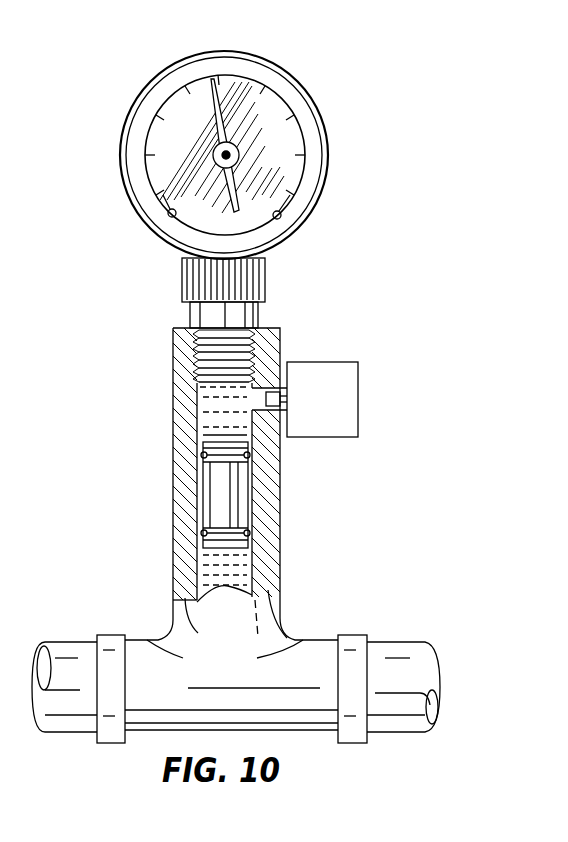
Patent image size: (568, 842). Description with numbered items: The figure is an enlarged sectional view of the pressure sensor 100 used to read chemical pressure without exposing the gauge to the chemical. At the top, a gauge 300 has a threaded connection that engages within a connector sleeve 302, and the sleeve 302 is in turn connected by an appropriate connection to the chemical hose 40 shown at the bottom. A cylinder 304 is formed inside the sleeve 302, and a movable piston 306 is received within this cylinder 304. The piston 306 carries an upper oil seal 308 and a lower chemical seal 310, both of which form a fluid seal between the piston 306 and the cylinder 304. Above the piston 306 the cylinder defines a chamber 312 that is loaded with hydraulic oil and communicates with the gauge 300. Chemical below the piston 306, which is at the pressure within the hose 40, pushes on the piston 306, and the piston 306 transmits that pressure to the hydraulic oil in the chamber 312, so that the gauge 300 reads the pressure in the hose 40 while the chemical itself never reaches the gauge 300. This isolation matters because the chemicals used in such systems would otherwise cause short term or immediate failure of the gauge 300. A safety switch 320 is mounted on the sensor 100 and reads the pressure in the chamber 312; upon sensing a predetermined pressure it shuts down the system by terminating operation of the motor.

The pressure sensor 100 is at (296, 66).
The gauge 300 is at (312, 133).
The connector sleeve 302 is at (175, 358).
The cylinder 304 is at (250, 570).
The movable piston 306 is at (237, 506).
The upper oil seal 308 is at (203, 458).
The lower chemical seal 310 is at (205, 536).
The chamber 312 is at (215, 405).
The safety switch 320 is at (357, 410).
The chemical hose 40 is at (397, 640).